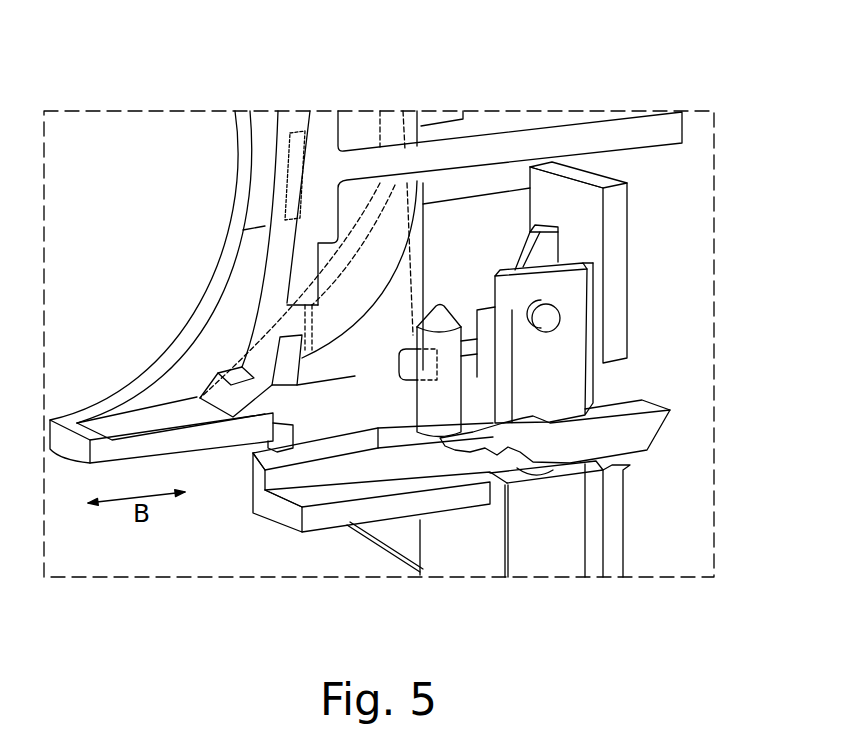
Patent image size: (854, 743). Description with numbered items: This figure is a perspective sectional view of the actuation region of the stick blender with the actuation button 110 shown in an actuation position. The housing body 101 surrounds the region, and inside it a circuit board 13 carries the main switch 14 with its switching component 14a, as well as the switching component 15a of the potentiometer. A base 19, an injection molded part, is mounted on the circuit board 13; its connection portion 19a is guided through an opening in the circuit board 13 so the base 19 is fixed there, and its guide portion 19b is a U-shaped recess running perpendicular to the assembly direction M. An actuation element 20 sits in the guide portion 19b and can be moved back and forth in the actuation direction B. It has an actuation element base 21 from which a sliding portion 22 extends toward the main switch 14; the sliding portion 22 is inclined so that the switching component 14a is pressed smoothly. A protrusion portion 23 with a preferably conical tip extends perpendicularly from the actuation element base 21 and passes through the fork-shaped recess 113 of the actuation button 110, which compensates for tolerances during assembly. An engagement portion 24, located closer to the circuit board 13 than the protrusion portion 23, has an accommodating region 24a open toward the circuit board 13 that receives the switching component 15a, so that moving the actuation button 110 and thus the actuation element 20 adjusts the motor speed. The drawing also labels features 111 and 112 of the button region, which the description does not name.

The housing body 101 is at (153, 402).
The actuation button 110 is at (357, 217).
The hanger slab 111 is at (277, 280).
The wedge slider 112 is at (303, 403).
The fork-shaped recess 113 is at (473, 368).
The circuit board 13 is at (621, 243).
The main switch 14 is at (587, 553).
The switching component 14a is at (548, 470).
The switching component 15a is at (545, 317).
The base 19 is at (363, 503).
The connection portion 19a is at (545, 247).
The guide portion 19b is at (329, 445).
The actuation element 20 is at (638, 442).
The actuation element base 21 is at (596, 472).
The sliding portion 22 is at (638, 477).
The protrusion portion 23 is at (442, 412).
The engagement portion 24 is at (543, 382).
The accommodating region 24a is at (567, 300).